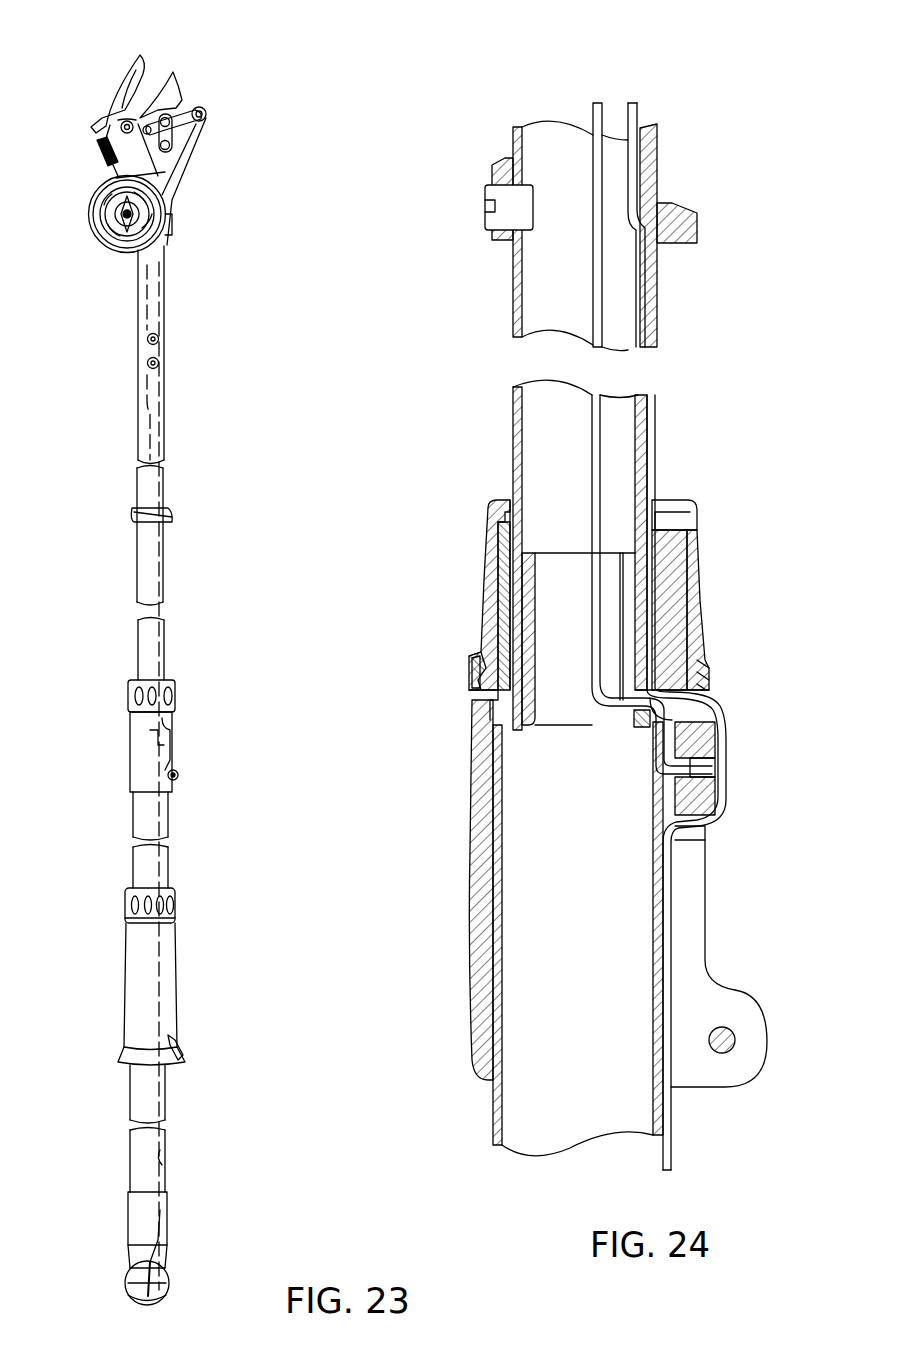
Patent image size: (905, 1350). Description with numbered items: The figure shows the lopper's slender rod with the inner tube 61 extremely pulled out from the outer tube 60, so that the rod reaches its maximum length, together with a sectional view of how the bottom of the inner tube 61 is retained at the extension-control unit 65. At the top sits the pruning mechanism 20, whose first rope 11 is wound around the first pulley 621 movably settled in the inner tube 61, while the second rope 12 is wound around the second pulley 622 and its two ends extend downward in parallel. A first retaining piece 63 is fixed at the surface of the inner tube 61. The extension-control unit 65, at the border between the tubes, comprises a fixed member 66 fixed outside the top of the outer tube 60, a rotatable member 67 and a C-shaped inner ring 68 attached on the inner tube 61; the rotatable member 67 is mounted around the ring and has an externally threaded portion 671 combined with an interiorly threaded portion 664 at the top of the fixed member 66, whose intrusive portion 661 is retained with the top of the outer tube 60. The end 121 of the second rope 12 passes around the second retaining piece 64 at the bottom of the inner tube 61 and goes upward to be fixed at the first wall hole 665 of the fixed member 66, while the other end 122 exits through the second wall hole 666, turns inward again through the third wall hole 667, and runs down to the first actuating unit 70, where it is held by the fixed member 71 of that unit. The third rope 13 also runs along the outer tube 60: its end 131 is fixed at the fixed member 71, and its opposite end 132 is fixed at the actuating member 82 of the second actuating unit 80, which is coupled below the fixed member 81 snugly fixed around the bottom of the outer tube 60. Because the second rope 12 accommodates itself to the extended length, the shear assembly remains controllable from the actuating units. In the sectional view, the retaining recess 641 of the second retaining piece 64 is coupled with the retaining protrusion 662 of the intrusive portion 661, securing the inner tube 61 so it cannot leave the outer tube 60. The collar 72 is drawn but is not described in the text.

In FIG. 23, the pruning mechanism 20 is at (100, 78).
In FIG. 23, the first rope 11 is at (170, 296).
In FIG. 23, the second rope 12 is at (166, 428).
In FIG. 24, the second rope 12 is at (596, 100).
In FIG. 23, the first pulley 621 is at (142, 340).
In FIG. 23, the second pulley 622 is at (140, 366).
In FIG. 23, the inner tube 61 is at (139, 568).
In FIG. 24, the inner tube 61 is at (527, 130).
In FIG. 23, the first retaining piece 63 is at (136, 515).
In FIG. 24, the first retaining piece 63 is at (492, 180).
In FIG. 23, the extension-control unit 65 is at (110, 673).
In FIG. 24, the extension-control unit 65 is at (462, 503).
In FIG. 23, the rotatable member 67 is at (176, 697).
In FIG. 24, the rotatable member 67 is at (700, 560).
In FIG. 24, the C-shaped inner ring 68 is at (684, 600).
In FIG. 23, the fixed member 66 is at (142, 768).
In FIG. 24, the fixed member 66 is at (470, 887).
In FIG. 23, the end of the second rope 121 is at (152, 738).
In FIG. 24, the end of the second rope 121 is at (714, 758).
In FIG. 23, the outer tube 60 is at (136, 806).
In FIG. 24, the outer tube 60 is at (493, 1110).
In FIG. 23, the first actuating unit 70 is at (104, 912).
In FIG. 23, the handle collar 72 is at (173, 905).
In FIG. 23, the fixed member 71 is at (132, 985).
In FIG. 23, the other end of the second rope 122 is at (180, 1058).
In FIG. 23, the end of the third rope 131 is at (183, 1078).
In FIG. 23, the second actuating unit 80 is at (112, 1190).
In FIG. 23, the third rope 13 is at (172, 1166).
In FIG. 23, the fixed member 81 is at (132, 1220).
In FIG. 23, the actuating member 82 is at (166, 1275).
In FIG. 23, the opposite end of the third rope 132 is at (120, 1296).
In FIG. 24, the second retaining piece 64 is at (537, 575).
In FIG. 24, the retaining recess 641 is at (641, 728).
In FIG. 24, the intrusive portion 661 is at (495, 705).
In FIG. 24, the interiorly threaded portion 664 is at (487, 672).
In FIG. 24, the externally threaded portion 671 is at (453, 595).
In FIG. 24, the retaining protrusion 662 is at (706, 668).
In FIG. 24, the second wall hole 666 is at (702, 712).
In FIG. 24, the first wall hole 665 is at (706, 778).
In FIG. 24, the third wall hole 667 is at (706, 823).